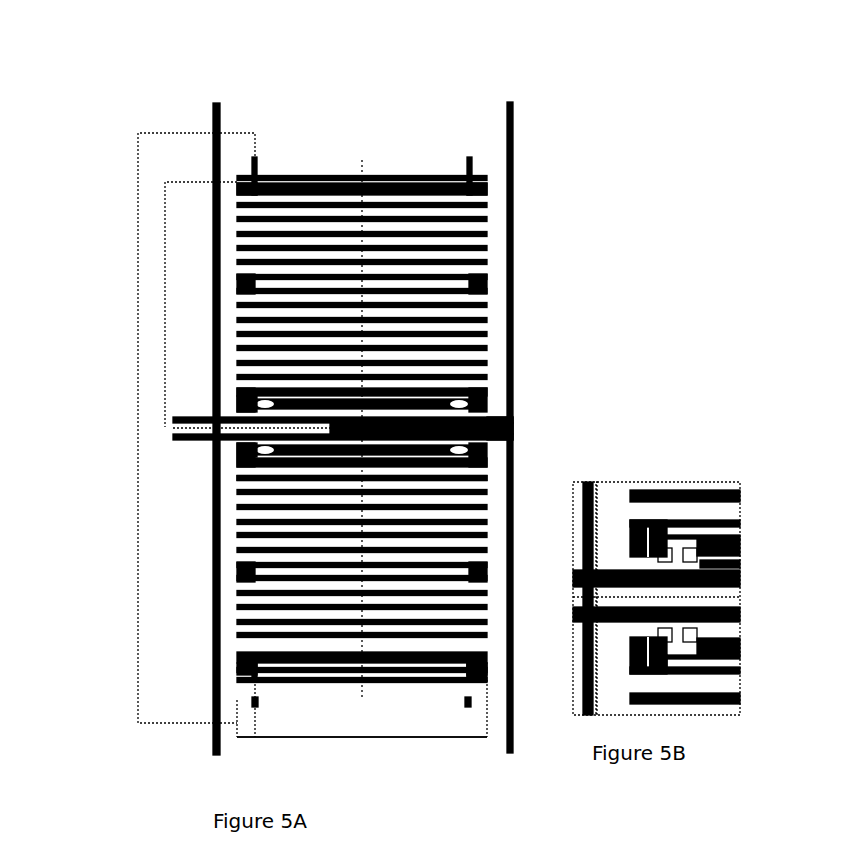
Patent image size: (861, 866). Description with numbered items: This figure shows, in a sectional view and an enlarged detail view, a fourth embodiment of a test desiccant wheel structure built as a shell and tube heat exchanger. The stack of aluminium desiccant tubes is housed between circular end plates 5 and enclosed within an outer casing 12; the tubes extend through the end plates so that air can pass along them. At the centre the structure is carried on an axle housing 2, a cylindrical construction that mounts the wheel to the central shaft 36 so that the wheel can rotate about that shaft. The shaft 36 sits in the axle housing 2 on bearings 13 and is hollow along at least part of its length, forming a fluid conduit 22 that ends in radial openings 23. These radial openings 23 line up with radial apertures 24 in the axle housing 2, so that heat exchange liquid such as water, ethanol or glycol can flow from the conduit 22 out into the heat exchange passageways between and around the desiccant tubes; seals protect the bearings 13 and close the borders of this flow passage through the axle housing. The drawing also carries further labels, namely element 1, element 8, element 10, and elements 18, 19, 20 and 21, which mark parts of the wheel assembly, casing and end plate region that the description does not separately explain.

In FIG. 5B, the electric machine 1 is at (640, 492).
In FIG. 5A, the axle housing 2 is at (488, 402).
In FIG. 5B, the axle housing 2 is at (740, 545).
In FIG. 5A, the circular end plates 5 is at (470, 672).
In FIG. 5B, the bearing 8 is at (673, 663).
In FIG. 5B, the rotor hub 10 is at (662, 540).
In FIG. 5A, the outer casing 12 is at (196, 428).
In FIG. 5B, the bearings 13 is at (630, 520).
In FIG. 5A, the left housing wall 18 is at (214, 104).
In FIG. 5A, the right housing wall 19 is at (513, 113).
In FIG. 5A, the stator 20 is at (240, 447).
In FIG. 5A, the stator lamination 21 is at (240, 377).
In FIG. 5A, the fluid conduit 22 is at (173, 430).
In FIG. 5B, the fluid conduit 22 is at (740, 600).
In FIG. 5A, the radial openings 23 is at (240, 408).
In FIG. 5A, the radial apertures 24 is at (240, 480).
In FIG. 5A, the central shaft 36 is at (515, 422).
In FIG. 5B, the central shaft 36 is at (740, 572).